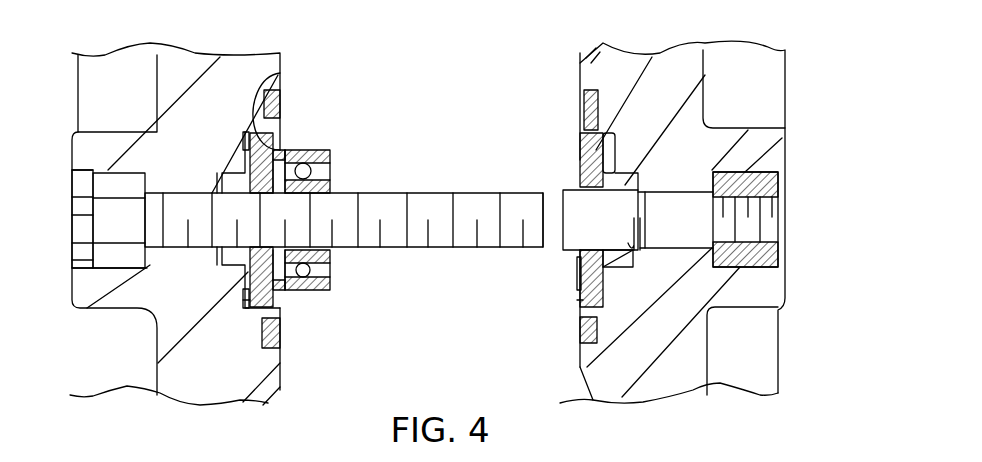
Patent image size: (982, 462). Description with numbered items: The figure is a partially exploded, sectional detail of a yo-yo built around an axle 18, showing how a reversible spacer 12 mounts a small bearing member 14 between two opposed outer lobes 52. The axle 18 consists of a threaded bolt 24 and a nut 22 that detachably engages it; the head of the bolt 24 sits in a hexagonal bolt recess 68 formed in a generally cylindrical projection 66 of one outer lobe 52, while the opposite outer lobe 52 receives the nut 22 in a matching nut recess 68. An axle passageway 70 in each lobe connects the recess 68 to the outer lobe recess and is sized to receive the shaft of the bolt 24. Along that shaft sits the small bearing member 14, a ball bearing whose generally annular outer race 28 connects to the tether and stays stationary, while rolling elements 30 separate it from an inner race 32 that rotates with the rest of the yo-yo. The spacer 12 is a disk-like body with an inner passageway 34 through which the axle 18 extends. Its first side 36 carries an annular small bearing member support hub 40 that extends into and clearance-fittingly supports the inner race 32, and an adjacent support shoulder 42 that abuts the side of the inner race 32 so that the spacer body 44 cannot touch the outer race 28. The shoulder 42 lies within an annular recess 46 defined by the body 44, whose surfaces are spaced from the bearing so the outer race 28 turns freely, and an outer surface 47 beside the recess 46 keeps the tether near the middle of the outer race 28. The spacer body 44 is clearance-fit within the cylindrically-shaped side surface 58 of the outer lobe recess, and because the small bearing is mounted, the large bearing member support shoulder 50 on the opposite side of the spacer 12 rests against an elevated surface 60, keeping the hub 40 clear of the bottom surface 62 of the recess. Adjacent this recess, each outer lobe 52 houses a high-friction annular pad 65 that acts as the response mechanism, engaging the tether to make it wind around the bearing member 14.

The reversible spacer 12 is at (235, 268).
The small bearing member 14 is at (341, 189).
The axle 18 is at (428, 183).
The nut 22 is at (740, 172).
The threaded bolt 24 is at (446, 252).
The outer race 28 is at (332, 156).
The rolling elements 30 is at (311, 269).
The inner race 32 is at (330, 184).
The inner passageway 34 is at (592, 217).
The first side 36 is at (285, 295).
The small bearing member support hub 40 is at (577, 190).
The small bearing member support shoulder 42 is at (286, 157).
The spacer body 44 is at (280, 73).
The annular recess 46 is at (278, 152).
The outer surface 47 is at (281, 296).
The large bearing member support shoulder 50 is at (615, 282).
The outer lobe 52 is at (264, 392).
The side surface 58 is at (584, 128).
The elevated surface 60 is at (610, 168).
The bottom surface 62 is at (642, 237).
The high-friction annular pad 65 is at (281, 344).
The cylindrical projection 66 is at (122, 312).
The bolt recess / nut recess 68 is at (82, 176).
The axle passageway 70 is at (686, 207).